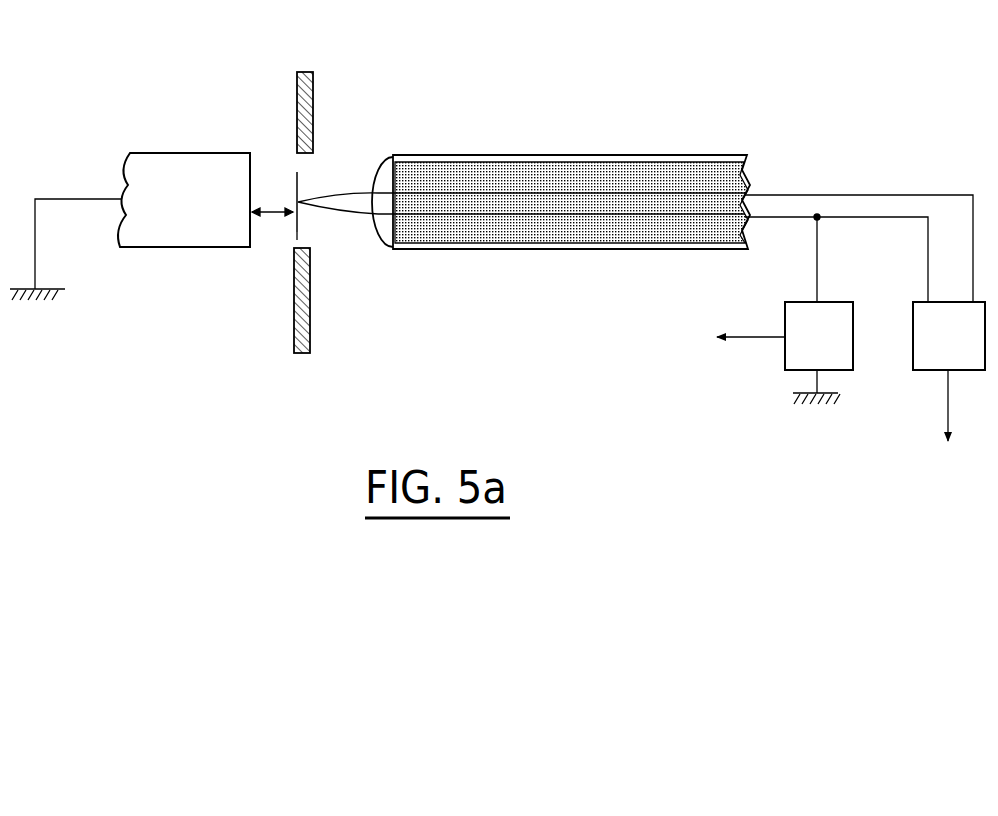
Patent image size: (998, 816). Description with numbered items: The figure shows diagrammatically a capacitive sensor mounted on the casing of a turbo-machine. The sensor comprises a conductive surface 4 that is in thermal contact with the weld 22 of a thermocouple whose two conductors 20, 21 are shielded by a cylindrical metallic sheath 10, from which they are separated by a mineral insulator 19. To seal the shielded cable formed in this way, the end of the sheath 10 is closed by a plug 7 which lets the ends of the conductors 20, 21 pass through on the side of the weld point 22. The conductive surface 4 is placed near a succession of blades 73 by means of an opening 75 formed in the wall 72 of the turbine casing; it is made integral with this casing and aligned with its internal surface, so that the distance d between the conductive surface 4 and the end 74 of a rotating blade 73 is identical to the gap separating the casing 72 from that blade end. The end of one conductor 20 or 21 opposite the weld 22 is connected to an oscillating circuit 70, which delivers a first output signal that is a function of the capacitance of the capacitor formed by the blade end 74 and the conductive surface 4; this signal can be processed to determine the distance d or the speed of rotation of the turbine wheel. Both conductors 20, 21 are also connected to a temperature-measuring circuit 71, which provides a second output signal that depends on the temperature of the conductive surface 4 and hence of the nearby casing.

The blades 73 is at (173, 151).
The blade end 74 is at (255, 177).
The casing wall 72 is at (314, 82).
The weld 22 is at (302, 188).
The conductive surface 4 is at (291, 223).
The opening 75 is at (303, 238).
The plug 7 is at (377, 157).
The cylindrical metallic sheath 10 is at (688, 154).
The mineral insulator 19 is at (598, 171).
The thermocouple conductor 20 is at (796, 192).
The thermocouple conductor 21 is at (775, 220).
The oscillating circuit 70 is at (779, 373).
The temperature-measuring circuit 71 is at (925, 373).
The distance d is at (272, 203).